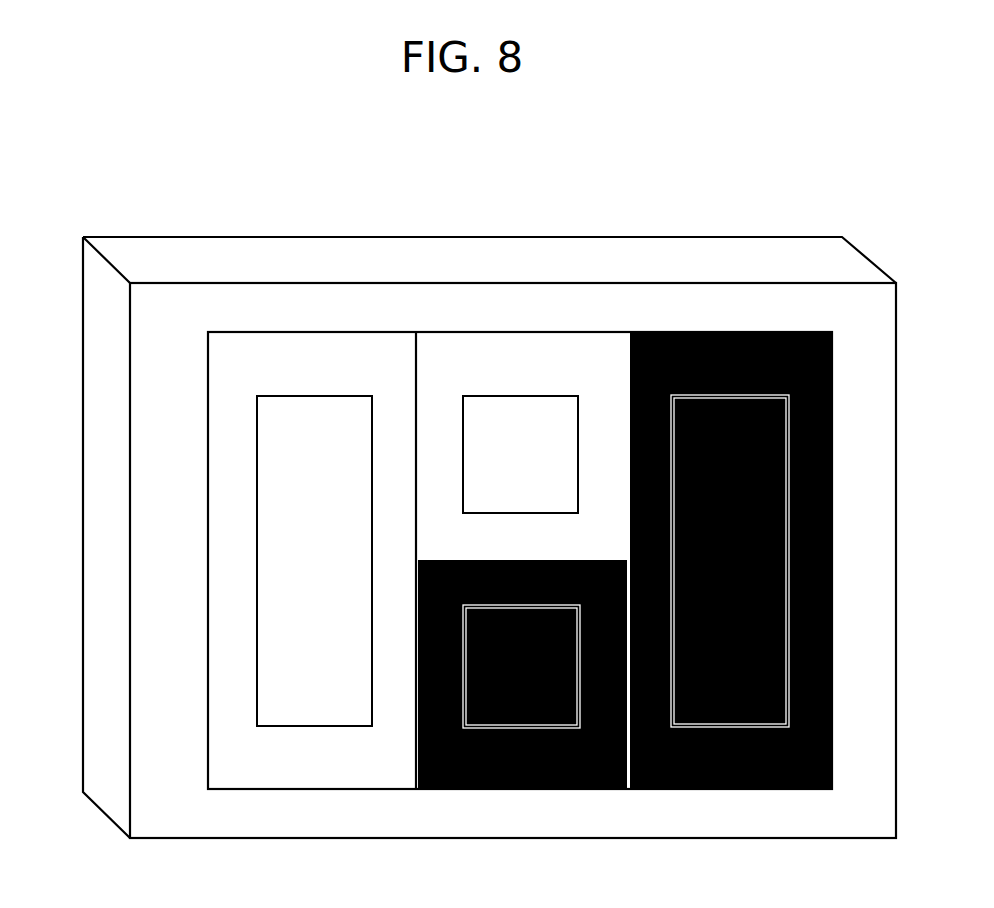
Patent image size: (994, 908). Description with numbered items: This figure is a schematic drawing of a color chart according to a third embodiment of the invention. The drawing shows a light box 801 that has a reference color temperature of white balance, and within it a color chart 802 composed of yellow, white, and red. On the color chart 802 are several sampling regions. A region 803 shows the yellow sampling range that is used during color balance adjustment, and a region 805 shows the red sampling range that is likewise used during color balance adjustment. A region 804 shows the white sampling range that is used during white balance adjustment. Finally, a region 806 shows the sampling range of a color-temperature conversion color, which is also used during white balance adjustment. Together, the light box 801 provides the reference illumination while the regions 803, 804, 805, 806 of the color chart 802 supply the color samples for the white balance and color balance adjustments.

The light box 801 is at (178, 250).
The color chart 802 is at (796, 332).
The region showing yellow sampling range 803 is at (310, 396).
The region showing white sampling range 804 is at (515, 396).
The region showing red sampling range 805 is at (722, 395).
The region showing sampling range of color-temperature conversion color 806 is at (535, 728).